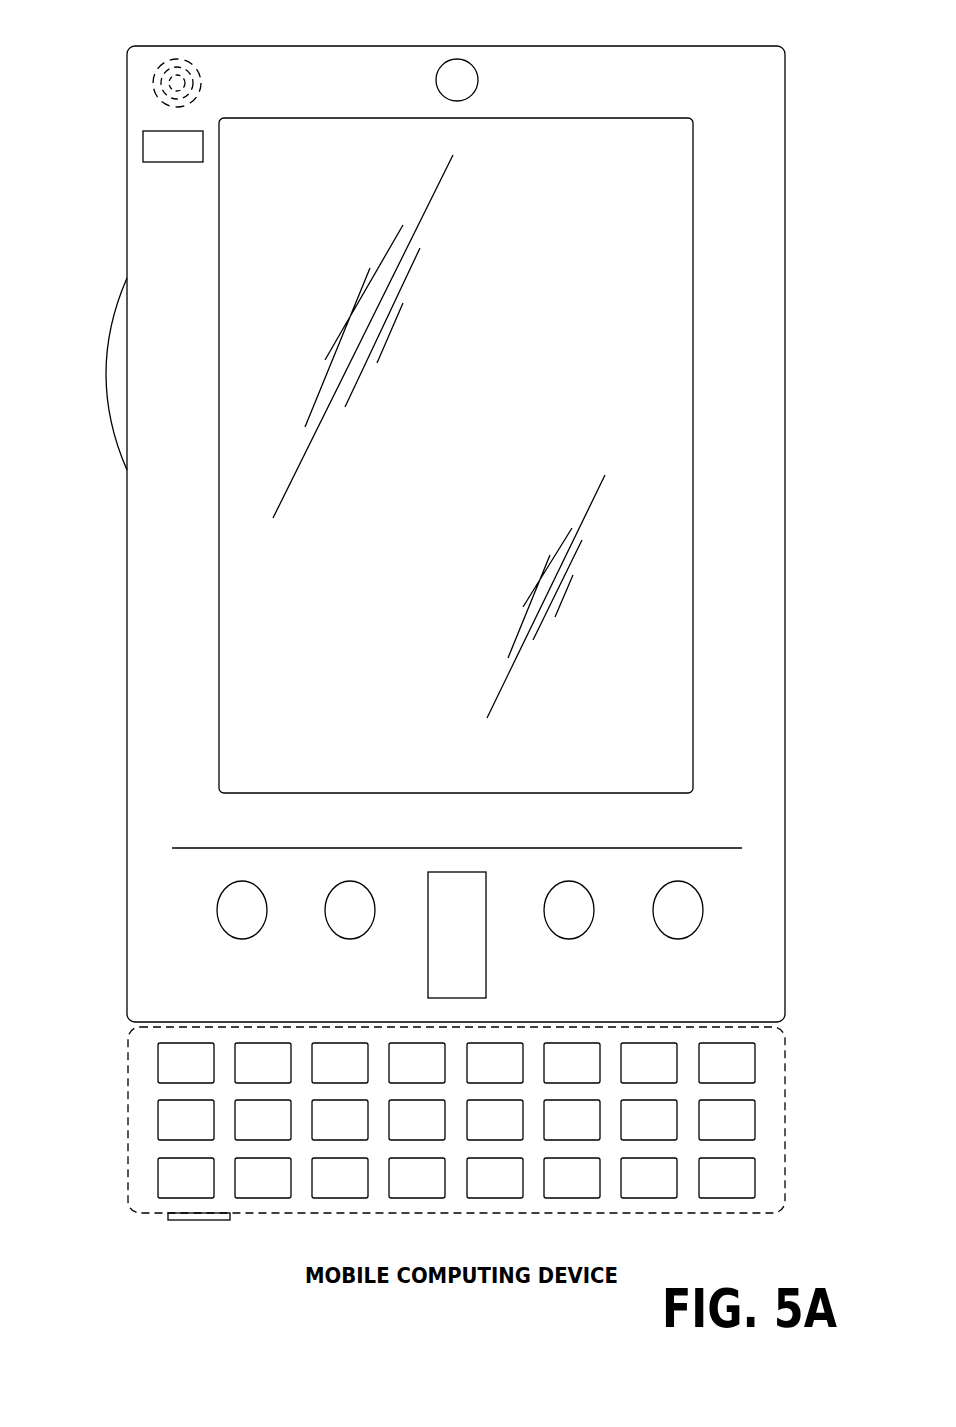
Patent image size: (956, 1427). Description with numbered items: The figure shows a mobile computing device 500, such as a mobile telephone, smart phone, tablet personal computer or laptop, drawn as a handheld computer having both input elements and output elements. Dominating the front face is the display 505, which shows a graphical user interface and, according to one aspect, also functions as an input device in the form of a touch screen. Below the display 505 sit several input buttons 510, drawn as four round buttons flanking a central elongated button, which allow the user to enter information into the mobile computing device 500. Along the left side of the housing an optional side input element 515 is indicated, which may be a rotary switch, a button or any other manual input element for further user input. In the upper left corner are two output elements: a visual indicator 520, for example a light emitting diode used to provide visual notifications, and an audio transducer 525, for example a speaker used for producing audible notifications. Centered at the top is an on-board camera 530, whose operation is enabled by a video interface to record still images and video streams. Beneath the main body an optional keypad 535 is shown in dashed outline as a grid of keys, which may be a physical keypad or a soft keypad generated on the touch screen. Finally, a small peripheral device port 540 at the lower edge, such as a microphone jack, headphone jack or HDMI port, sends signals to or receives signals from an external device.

The mobile computing device 500 is at (750, 45).
The display 505 is at (243, 629).
The input buttons 510 is at (243, 938).
The side input element 515 is at (106, 378).
The visual indicator 520 is at (143, 147).
The audio transducer 525 is at (152, 86).
The on-board camera 530 is at (456, 59).
The keypad 535 is at (135, 1116).
The peripheral device port 540 is at (178, 1222).